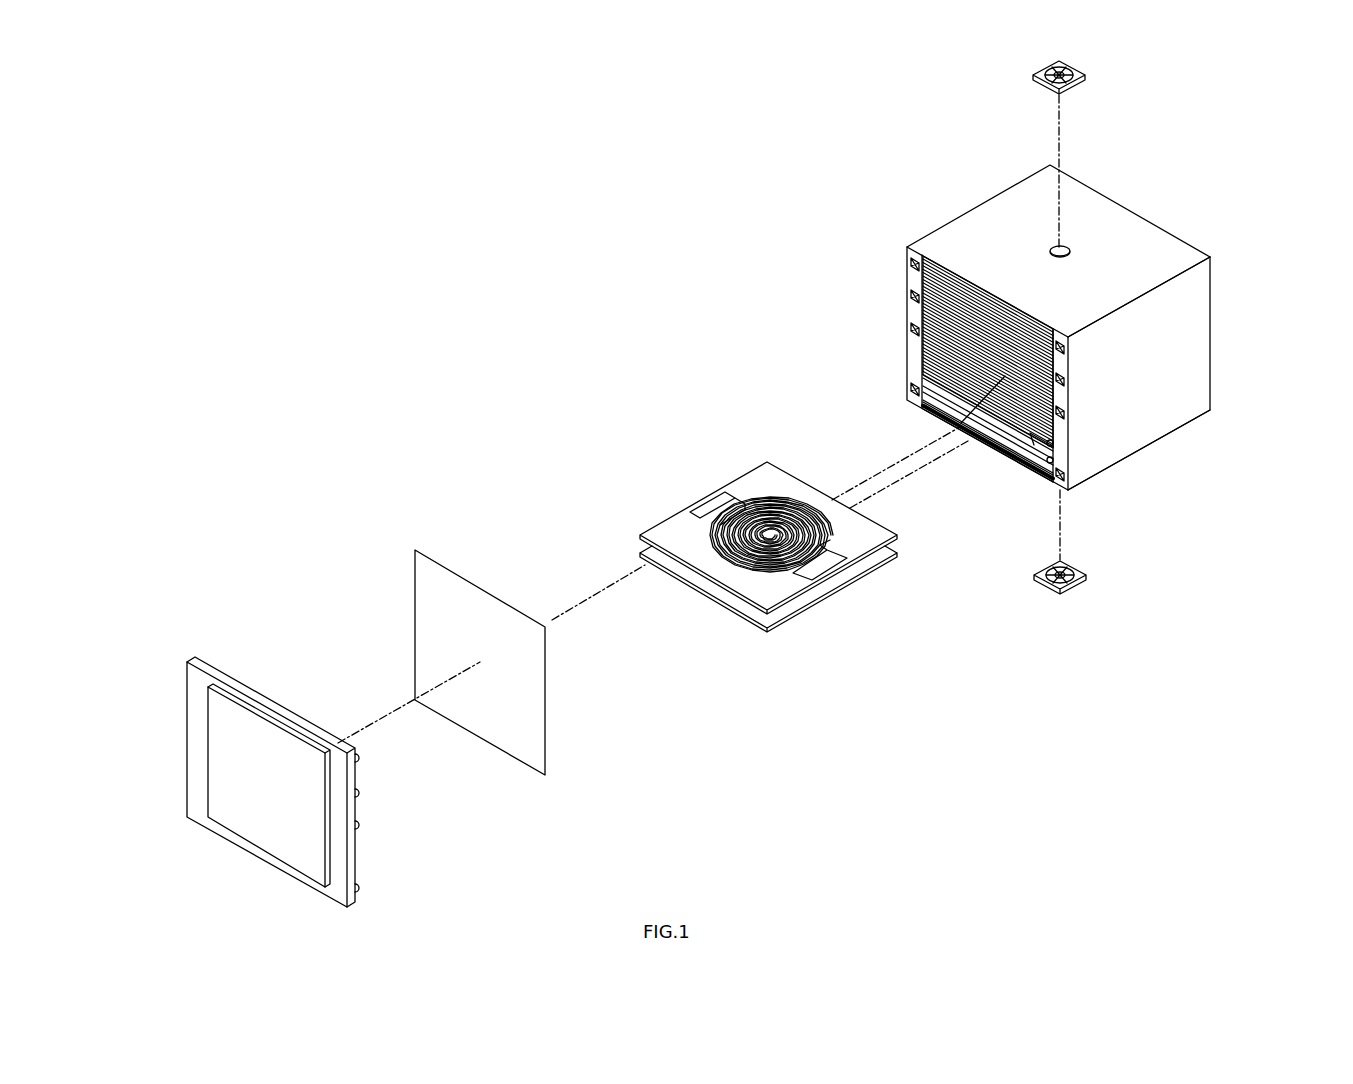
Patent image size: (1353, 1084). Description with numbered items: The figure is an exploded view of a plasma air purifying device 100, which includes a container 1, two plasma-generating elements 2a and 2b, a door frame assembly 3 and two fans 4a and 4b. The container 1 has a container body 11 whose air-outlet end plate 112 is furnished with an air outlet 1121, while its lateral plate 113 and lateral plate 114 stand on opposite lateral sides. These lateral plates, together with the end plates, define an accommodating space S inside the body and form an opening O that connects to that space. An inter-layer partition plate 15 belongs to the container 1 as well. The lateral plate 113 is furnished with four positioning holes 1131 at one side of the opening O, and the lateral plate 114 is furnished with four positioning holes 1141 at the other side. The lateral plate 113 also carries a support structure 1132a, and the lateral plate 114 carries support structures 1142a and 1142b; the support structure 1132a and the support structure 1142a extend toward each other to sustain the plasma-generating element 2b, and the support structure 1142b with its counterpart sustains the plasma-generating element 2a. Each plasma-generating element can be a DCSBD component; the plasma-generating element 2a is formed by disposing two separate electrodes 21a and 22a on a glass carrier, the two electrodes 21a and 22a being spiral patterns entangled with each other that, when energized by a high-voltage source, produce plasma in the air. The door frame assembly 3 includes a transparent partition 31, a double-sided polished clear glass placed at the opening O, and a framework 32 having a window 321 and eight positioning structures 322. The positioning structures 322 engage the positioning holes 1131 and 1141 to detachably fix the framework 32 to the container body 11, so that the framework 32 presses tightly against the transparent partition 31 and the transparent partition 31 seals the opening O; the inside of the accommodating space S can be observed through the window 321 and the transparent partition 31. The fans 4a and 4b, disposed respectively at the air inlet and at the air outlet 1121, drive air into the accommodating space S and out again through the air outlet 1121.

The plasma air purifying device 100 is at (570, 360).
The container 1 is at (1243, 291).
The container body 11 is at (1211, 353).
The air-outlet end plate 112 is at (1141, 232).
The air outlet 1121 is at (1048, 247).
The lateral plate 113 is at (908, 302).
The positioning holes 1131 is at (911, 265).
The support structure 1132a is at (911, 389).
The opening O is at (922, 375).
The lateral plate 114 is at (1168, 415).
The positioning holes 1141 is at (1065, 420).
The support structure 1142a is at (1052, 462).
The support structure 1142b is at (1055, 445).
The inter-layer partition plate 15 is at (1032, 436).
The accommodating space S is at (1006, 444).
The fan 4a is at (1088, 577).
The fan 4b is at (1087, 78).
The plasma-generating element 2a is at (650, 533).
The electrode 21a is at (715, 505).
The plasma-generating element 2b is at (640, 553).
The electrode 22a is at (818, 572).
The door frame assembly 3 is at (320, 537).
The transparent partition 31 is at (410, 584).
The framework 32 is at (246, 663).
The window 321 is at (205, 752).
The positioning structures 322 is at (358, 757).